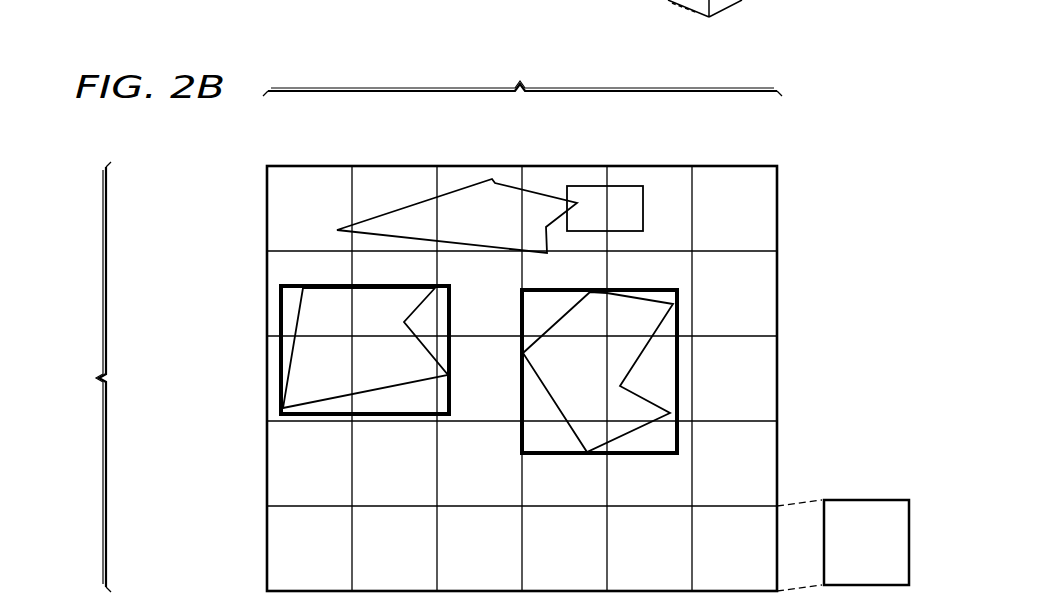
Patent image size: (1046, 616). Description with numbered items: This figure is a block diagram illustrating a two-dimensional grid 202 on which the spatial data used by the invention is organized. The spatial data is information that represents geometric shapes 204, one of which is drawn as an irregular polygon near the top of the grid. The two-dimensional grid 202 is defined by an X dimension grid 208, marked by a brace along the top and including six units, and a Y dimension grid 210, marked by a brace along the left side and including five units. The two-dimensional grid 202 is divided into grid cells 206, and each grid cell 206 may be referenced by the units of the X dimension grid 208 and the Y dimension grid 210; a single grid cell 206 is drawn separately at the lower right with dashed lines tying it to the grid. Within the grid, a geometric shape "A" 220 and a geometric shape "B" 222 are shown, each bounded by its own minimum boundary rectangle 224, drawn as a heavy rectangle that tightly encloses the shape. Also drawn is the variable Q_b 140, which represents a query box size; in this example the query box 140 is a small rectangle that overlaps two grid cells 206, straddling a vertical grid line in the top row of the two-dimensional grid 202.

The two-dimensional grid 202 is at (413, 310).
The geometric shapes 204 is at (463, 192).
The grid cells 206 is at (866, 500).
The X dimension grid 208 is at (390, 72).
The Y dimension grid 210 is at (72, 288).
The query box size variable Q_b 140 is at (625, 186).
The geometric shape A 220 is at (300, 310).
The geometric shape B 222 is at (640, 363).
The minimum boundary rectangle 224 is at (281, 352).